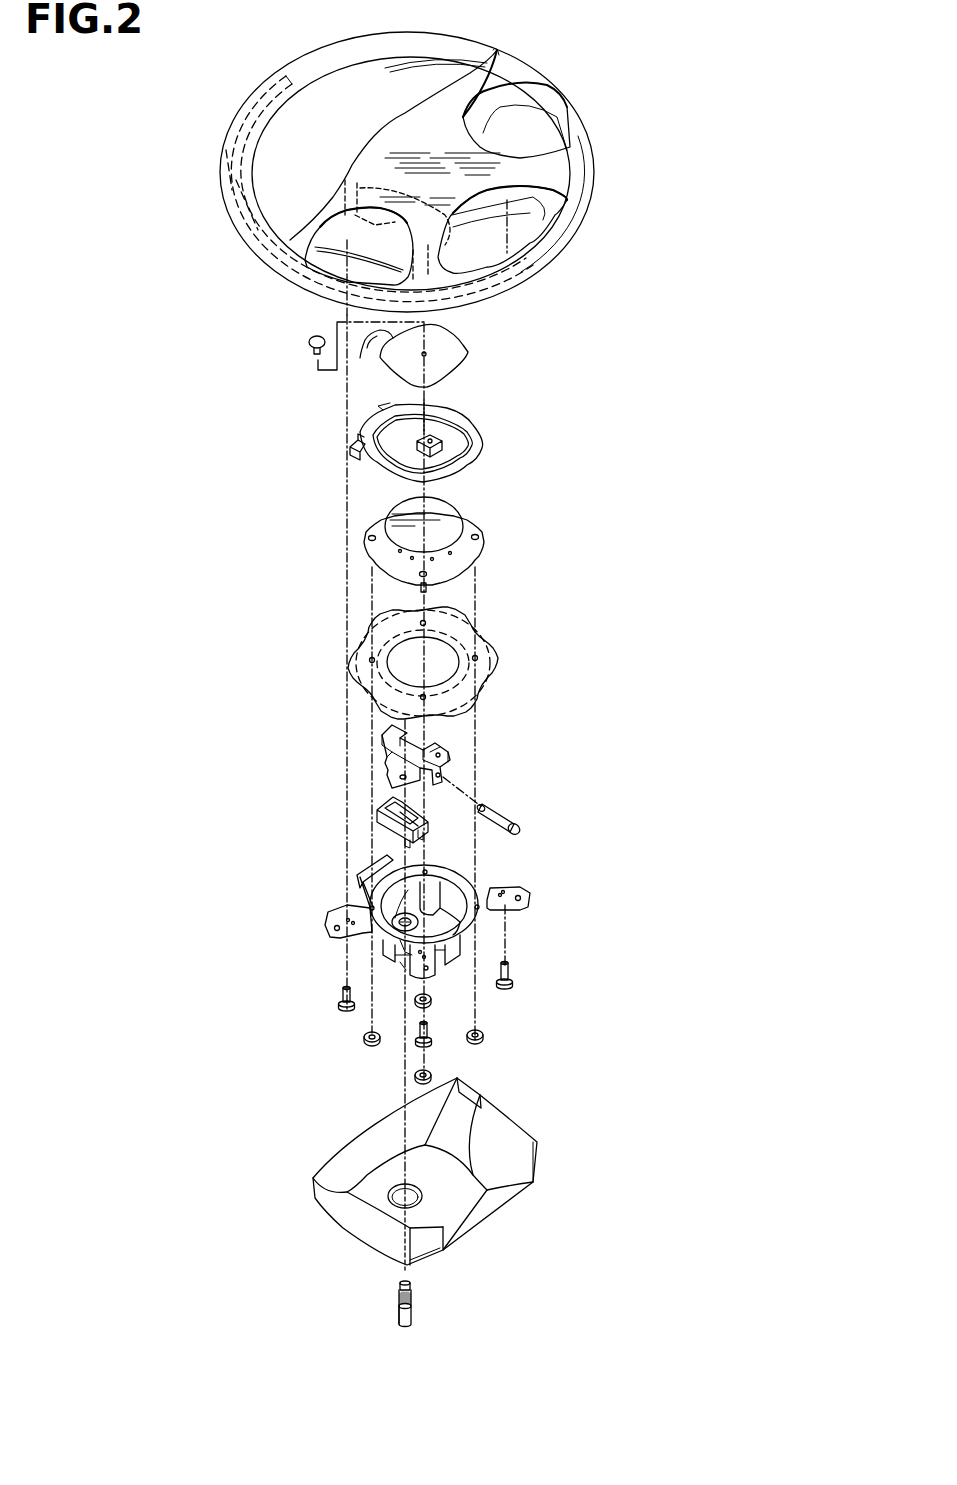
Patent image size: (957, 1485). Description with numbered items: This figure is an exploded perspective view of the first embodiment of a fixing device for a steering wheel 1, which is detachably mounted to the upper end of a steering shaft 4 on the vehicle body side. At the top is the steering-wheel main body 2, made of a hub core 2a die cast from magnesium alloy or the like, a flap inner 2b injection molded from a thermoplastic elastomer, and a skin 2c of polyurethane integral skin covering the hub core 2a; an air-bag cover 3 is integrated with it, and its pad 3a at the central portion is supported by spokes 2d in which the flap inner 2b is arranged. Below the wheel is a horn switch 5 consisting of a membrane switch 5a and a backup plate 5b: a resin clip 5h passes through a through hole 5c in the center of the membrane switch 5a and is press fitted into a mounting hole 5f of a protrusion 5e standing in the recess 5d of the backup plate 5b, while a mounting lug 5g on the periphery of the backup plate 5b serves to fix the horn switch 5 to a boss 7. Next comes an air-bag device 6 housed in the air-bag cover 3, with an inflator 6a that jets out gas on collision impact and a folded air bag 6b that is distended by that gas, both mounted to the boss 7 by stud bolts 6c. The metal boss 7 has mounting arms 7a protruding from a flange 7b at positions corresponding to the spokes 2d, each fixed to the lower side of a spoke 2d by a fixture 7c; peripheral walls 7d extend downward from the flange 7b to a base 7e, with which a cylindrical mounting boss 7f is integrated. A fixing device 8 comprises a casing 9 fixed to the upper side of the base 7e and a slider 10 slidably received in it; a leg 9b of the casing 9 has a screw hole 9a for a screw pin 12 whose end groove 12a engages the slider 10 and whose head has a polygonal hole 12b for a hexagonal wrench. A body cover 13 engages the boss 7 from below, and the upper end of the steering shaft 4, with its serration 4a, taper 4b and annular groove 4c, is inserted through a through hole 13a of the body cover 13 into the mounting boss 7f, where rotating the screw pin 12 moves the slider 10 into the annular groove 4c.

The steering wheel 1 is at (568, 77).
The steering-wheel main body 2 is at (115, 143).
The hub core 2a is at (255, 228).
The flap inner 2b is at (345, 183).
The skin 2c is at (232, 170).
The spokes 2d is at (523, 170).
The air-bag cover 3 is at (373, 148).
The pad 3a is at (407, 143).
The steering shaft 4 is at (412, 1318).
The serration (rotation stopper) 4a is at (415, 1292).
The taper (fit-amount restrainer) 4b is at (395, 1310).
The annular groove 4c is at (400, 1288).
The horn switch 5 is at (567, 360).
The membrane switch 5a is at (452, 358).
The backup plate 5b is at (477, 433).
The through hole 5c is at (425, 353).
The recess 5d is at (395, 462).
The protrusion 5e is at (440, 448).
The mounting hole 5f is at (398, 426).
The mounting lug 5g is at (357, 455).
The resin clip 5h is at (310, 343).
The air-bag device 6 is at (575, 535).
The inflator 6a is at (447, 525).
The air bag 6b is at (480, 617).
The stud bolts 6c is at (420, 588).
The boss 7 is at (473, 873).
The mounting arms 7a is at (512, 908).
The flange 7b is at (475, 925).
The fixture 7c is at (340, 993).
The peripheral walls 7d is at (385, 948).
The base 7e is at (417, 935).
The mounting boss 7f is at (373, 907).
The fixing device 8 is at (273, 725).
The casing 9 is at (382, 738).
The screw hole 9a is at (440, 775).
The leg 9b is at (443, 767).
The slider 10 is at (387, 803).
The screw pin 12 is at (508, 818).
The groove 12a is at (487, 807).
The polygonal hole 12b is at (520, 832).
The body cover 13 is at (515, 1183).
The through hole 13a is at (397, 1194).